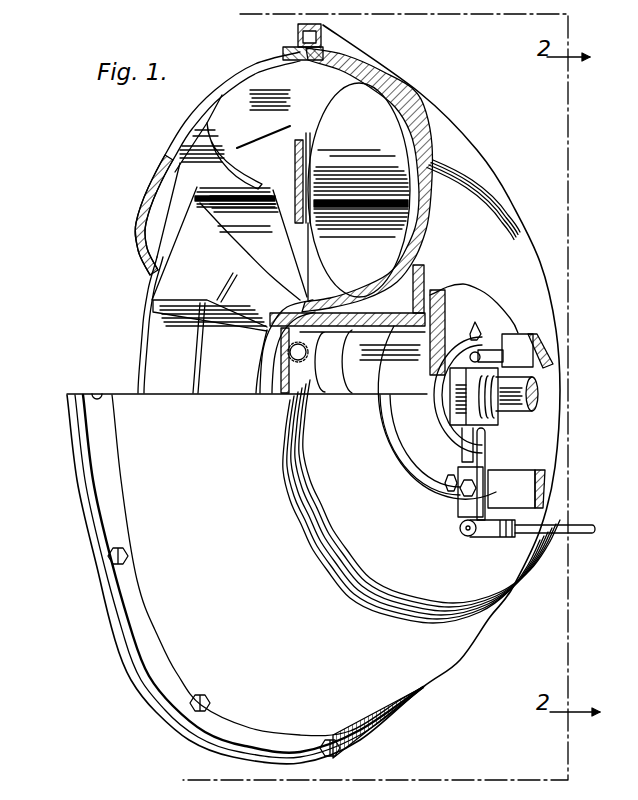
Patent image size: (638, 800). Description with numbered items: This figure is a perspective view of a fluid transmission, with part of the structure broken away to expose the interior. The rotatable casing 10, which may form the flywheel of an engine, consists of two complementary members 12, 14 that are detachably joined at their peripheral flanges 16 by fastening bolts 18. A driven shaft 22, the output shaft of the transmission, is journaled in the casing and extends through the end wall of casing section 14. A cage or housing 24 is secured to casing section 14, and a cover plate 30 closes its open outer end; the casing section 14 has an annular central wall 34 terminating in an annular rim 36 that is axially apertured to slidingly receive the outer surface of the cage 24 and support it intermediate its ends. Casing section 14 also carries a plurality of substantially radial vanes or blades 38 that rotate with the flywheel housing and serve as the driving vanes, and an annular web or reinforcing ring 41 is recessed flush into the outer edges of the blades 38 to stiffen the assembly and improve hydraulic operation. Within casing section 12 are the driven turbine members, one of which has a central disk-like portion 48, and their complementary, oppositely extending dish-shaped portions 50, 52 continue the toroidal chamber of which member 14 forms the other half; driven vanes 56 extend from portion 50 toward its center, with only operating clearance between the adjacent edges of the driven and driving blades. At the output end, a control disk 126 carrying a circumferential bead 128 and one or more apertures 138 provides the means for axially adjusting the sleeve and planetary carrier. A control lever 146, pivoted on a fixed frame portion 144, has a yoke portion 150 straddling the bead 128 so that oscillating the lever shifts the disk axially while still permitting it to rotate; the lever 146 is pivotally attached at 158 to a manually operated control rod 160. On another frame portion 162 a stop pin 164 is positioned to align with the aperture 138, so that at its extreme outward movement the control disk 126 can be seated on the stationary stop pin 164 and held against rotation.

The rotatable casing 10 is at (108, 630).
The complementary casing member 12 is at (260, 63).
The complementary casing member 14 is at (418, 668).
The peripheral flanges 16 is at (106, 515).
The fastening bolts 18 is at (200, 712).
The driven shaft 22 is at (512, 396).
The cage or housing 24 is at (365, 320).
The cover plate 30 is at (457, 313).
The annular central wall 34 is at (366, 293).
The annular rim 36 is at (295, 303).
The vanes or blades 38 is at (375, 142).
The annular web or reinforcing ring 41 is at (299, 142).
The central annular disk-like portion 48 is at (143, 360).
The annular dish-shaped portion 50 is at (140, 222).
The annular dish-shaped portion 52 is at (246, 398).
The driven vanes 56 is at (225, 170).
The control disk 126 is at (456, 412).
The circumferential bead 128 is at (478, 348).
The aperture 138 is at (500, 346).
The fixed frame portion 144 is at (520, 487).
The control lever 146 is at (466, 505).
The yoke portion 150 is at (478, 452).
The pivotal attachment 158 is at (466, 536).
The control rod 160 is at (580, 534).
The frame portion 162 is at (538, 366).
The stop pin 164 is at (527, 343).